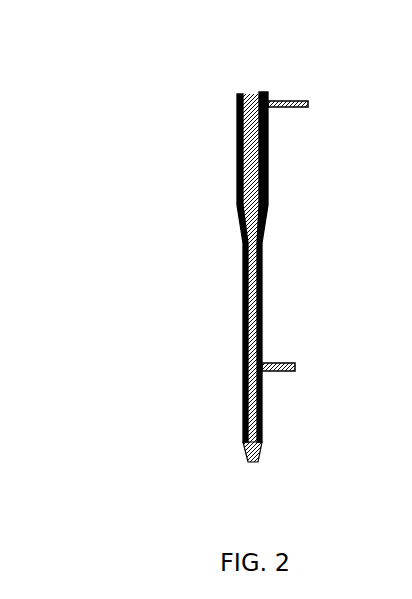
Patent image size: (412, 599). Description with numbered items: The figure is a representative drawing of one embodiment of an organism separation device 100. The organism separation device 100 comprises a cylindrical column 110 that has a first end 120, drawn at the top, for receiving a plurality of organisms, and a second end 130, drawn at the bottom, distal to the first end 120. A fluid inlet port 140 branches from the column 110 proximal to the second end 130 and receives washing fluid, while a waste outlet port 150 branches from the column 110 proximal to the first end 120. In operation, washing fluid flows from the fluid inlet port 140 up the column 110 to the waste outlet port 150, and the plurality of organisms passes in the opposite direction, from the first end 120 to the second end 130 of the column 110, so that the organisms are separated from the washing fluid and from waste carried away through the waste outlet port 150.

The organism separation device 100 is at (211, 255).
The column 110 is at (220, 95).
The first end 120 is at (250, 80).
The second end 130 is at (253, 466).
The fluid inlet port 140 is at (305, 367).
The waste outlet port 150 is at (312, 105).